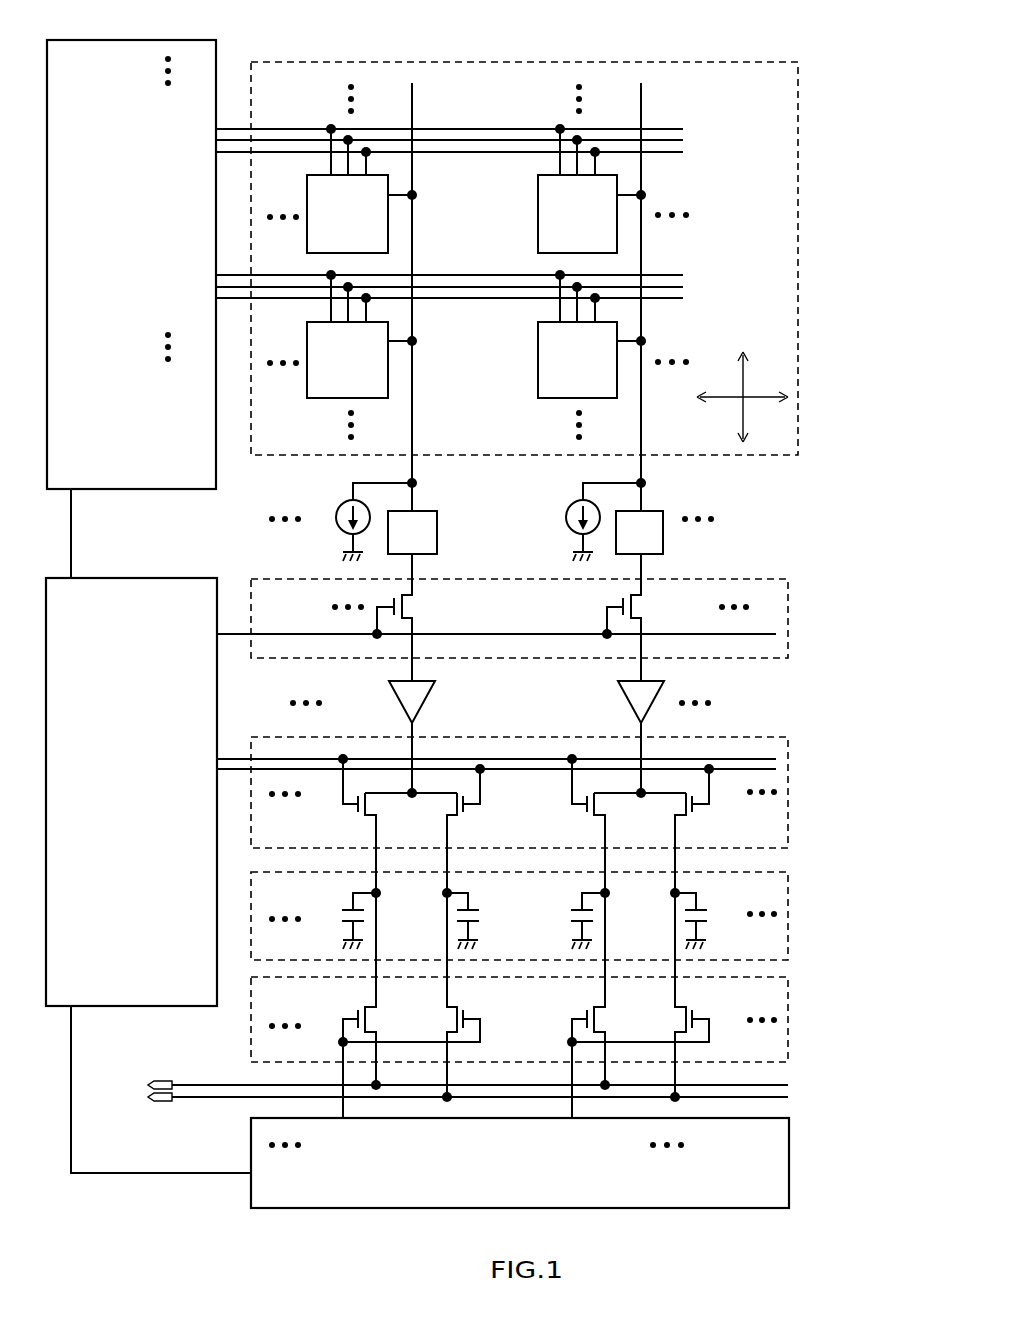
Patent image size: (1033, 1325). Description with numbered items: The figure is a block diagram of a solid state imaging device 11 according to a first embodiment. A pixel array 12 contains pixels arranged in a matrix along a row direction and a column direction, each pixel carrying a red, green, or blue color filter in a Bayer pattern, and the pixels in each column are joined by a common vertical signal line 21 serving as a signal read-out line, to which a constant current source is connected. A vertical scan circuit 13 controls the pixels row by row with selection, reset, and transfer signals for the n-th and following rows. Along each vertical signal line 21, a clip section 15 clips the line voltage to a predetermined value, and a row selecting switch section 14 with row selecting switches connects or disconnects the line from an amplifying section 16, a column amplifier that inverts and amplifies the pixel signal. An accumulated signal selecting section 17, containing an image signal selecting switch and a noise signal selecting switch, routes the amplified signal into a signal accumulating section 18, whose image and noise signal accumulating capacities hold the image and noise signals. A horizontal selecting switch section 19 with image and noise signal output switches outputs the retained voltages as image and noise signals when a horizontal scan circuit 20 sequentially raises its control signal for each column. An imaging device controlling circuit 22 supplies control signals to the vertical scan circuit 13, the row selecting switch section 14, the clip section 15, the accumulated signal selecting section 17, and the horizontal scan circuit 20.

The solid state imaging device 11 is at (797, 39).
The pixel array 12 is at (300, 62).
The vertical scan circuit 13 is at (131, 264).
The row selecting switch section 14 is at (788, 607).
The clip section 15 is at (437, 530).
The amplifying section 16 is at (397, 700).
The accumulated signal selecting section 17 is at (788, 800).
The signal accumulating section 18 is at (788, 888).
The horizontal selecting switch section 19 is at (788, 1013).
The horizontal scan circuit 20 is at (520, 1163).
The vertical signal line 21 is at (412, 100).
The imaging device controlling circuit 22 is at (131, 792).